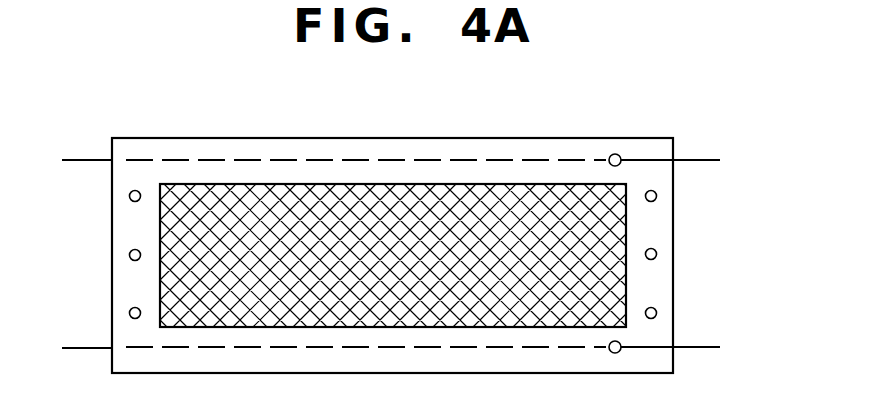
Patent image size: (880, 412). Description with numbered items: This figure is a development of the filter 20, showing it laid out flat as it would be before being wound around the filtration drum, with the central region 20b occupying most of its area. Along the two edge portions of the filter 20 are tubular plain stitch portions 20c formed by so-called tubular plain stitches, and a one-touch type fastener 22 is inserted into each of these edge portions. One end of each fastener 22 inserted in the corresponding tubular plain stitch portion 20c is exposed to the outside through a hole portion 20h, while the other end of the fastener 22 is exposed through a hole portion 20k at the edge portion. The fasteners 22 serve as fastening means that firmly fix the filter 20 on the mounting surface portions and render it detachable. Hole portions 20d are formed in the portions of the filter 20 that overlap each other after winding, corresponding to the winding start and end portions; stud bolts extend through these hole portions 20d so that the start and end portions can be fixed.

The filter 20 is at (482, 136).
The mesh portion 20b is at (277, 210).
The tubular plain stitch portion 20c is at (564, 140).
The hole portion 20d is at (658, 198).
The hole portion 20h is at (619, 154).
The hole portion 20k is at (110, 160).
The one-touch type fastener 22 is at (705, 159).